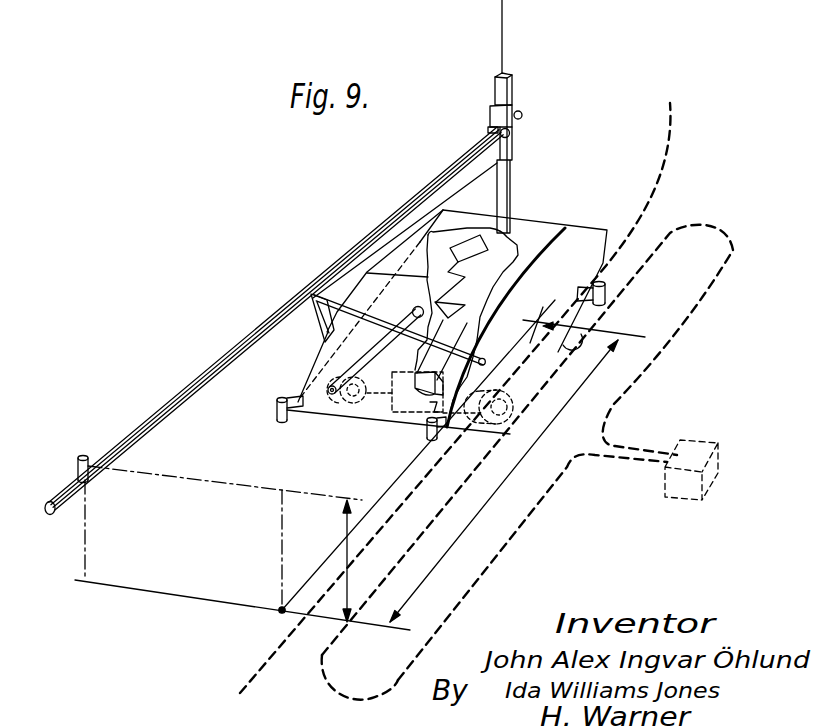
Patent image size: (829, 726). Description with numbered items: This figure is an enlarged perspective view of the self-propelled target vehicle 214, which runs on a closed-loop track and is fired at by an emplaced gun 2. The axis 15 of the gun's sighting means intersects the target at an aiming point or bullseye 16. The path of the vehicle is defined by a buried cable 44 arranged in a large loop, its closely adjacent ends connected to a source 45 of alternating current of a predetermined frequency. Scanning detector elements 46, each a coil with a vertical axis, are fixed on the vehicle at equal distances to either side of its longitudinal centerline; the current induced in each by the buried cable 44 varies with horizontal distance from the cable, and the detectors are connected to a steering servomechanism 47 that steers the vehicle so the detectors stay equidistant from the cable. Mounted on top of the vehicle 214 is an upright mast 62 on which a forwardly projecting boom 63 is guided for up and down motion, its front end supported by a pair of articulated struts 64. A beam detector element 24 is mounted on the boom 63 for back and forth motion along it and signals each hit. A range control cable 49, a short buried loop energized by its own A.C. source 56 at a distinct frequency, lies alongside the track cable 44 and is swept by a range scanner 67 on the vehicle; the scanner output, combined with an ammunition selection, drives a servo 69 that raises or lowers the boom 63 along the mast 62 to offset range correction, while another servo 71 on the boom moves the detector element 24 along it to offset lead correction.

The emplaced gun 2 is at (357, 356).
The axis of the sighting means 15 is at (630, 336).
The aiming point 16 is at (534, 318).
The beam detector element 24 is at (78, 465).
The buried cable 44 is at (260, 663).
The source of alternating current 45 is at (249, 4).
The scanning detector elements 46 is at (259, 420).
The steering servomechanism 47 is at (451, 238).
The range control cable 49 is at (547, 500).
The A.C. source 56 is at (698, 443).
The upright mast 62 is at (510, 174).
The boom 63 is at (345, 262).
The articulated struts 64 is at (313, 317).
The range scanner 67 is at (607, 293).
The servo 69 is at (523, 112).
The servo 71 is at (488, 130).
The self-propelled target vehicle 214 is at (537, 230).